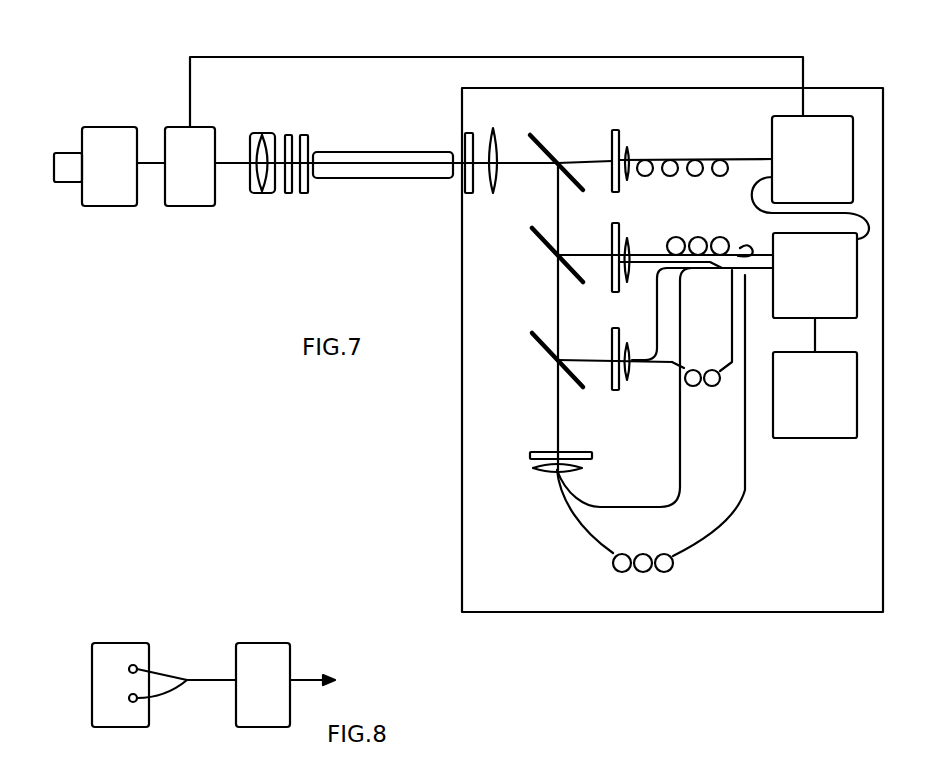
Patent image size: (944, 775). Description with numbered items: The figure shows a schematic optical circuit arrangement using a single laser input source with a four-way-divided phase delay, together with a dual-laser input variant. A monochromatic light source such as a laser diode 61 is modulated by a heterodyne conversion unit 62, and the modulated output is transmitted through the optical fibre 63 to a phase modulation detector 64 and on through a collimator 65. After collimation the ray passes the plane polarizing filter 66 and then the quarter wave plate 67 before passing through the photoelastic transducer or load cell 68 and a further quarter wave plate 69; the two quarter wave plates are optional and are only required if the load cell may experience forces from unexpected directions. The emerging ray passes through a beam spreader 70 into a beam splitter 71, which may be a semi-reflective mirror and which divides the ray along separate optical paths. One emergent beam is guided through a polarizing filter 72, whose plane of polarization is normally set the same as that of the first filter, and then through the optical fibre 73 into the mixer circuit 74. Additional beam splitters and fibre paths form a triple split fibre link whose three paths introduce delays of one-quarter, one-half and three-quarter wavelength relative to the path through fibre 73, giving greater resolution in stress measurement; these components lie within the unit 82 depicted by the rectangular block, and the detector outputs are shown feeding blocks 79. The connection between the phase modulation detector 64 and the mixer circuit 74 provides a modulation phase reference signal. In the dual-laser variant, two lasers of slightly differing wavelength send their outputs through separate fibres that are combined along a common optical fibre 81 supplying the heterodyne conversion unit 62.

In FIG. 7, the laser diode 61 is at (75, 177).
In FIG. 8, the laser diode 61 is at (108, 662).
In FIG. 7, the heterodyne conversion unit 62 is at (112, 173).
In FIG. 8, the heterodyne conversion unit 62 is at (252, 660).
In FIG. 7, the optical fibre 63 is at (150, 155).
In FIG. 7, the phase modulation detector 64 is at (188, 173).
In FIG. 7, the collimator 65 is at (262, 193).
In FIG. 7, the plane polarizing filter 66 is at (288, 133).
In FIG. 7, the quarter wave plate 67 is at (308, 197).
In FIG. 7, the photoelastic transducer or load cell 68 is at (376, 157).
In FIG. 7, the quarter wave plate 69 is at (477, 192).
In FIG. 7, the beam spreader 70 is at (493, 140).
In FIG. 7, the beam splitter 71 is at (550, 150).
In FIG. 7, the polarizing filter 72 is at (625, 150).
In FIG. 7, the optical fibre 73 is at (685, 158).
In FIG. 7, the mixer circuit 74 is at (812, 159).
In FIG. 7, the detector 79 is at (815, 335).
In FIG. 8, the common optical fibre 81 is at (205, 685).
In FIG. 7, the unit 82 is at (478, 410).